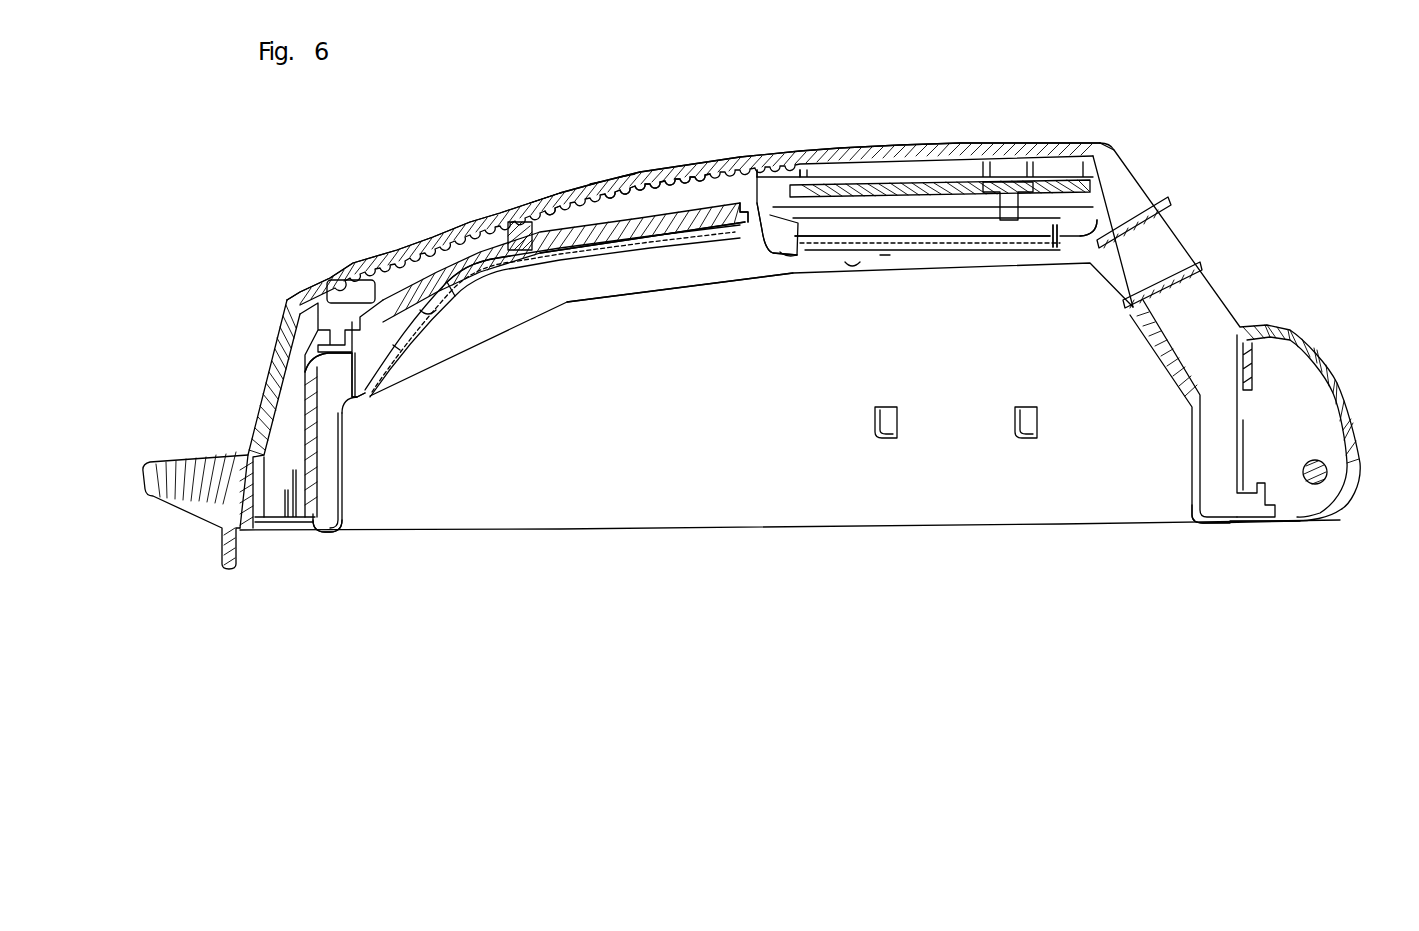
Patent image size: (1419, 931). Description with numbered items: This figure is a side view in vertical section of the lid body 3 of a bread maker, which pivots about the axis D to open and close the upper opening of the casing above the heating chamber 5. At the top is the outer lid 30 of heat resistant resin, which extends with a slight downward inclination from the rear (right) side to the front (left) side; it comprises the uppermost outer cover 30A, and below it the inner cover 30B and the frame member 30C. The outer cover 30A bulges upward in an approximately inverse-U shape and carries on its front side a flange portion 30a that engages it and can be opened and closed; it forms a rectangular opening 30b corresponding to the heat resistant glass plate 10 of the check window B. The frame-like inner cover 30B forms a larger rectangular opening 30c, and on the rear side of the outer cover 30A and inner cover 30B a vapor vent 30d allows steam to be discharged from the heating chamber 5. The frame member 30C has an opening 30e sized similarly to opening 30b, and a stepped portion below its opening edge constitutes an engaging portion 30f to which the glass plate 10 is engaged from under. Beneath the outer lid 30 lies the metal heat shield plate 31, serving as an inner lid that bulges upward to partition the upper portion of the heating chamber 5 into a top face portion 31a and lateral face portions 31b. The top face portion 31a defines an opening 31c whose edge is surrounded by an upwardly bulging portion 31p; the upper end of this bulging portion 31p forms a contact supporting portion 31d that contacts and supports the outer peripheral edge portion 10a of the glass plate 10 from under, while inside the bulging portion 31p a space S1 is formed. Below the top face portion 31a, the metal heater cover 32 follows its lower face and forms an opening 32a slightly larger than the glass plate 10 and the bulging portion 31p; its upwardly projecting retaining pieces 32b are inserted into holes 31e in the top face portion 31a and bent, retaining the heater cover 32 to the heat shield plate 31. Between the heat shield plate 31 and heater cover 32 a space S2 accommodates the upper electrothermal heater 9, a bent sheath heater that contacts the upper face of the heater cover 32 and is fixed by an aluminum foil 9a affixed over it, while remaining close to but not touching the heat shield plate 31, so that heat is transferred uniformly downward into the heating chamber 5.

The lid body 3 is at (1027, 113).
The heating chamber 5 is at (801, 500).
The upper electrothermal heater 9 is at (423, 310).
The aluminum foil 9a is at (395, 345).
The heat resistant glass plate 10 is at (707, 167).
The outer peripheral edge portion 10a is at (750, 160).
The outer lid 30 is at (630, 382).
The outer cover 30A is at (923, 145).
The inner cover 30B is at (1187, 340).
The frame member 30C is at (773, 167).
The flange portion 30a is at (178, 466).
The opening 30b is at (560, 196).
The opening 30c is at (340, 405).
The vapor vent 30d is at (1150, 230).
The opening 30e is at (570, 182).
The engaging portion 30f is at (593, 170).
The heat shield plate 31 is at (1175, 397).
The top face portion 31a is at (450, 287).
The lateral face portions 31b is at (345, 523).
The opening 31c is at (673, 237).
The contact supporting portion 31d is at (572, 232).
The holes 31e is at (360, 397).
The bulging portion 31p is at (503, 263).
The heater cover 32 is at (365, 394).
The opening 32a is at (787, 273).
The retaining pieces 32b is at (827, 167).
The check window B is at (645, 150).
The axis D is at (1318, 485).
The space S1 is at (643, 263).
The space S2 is at (442, 315).